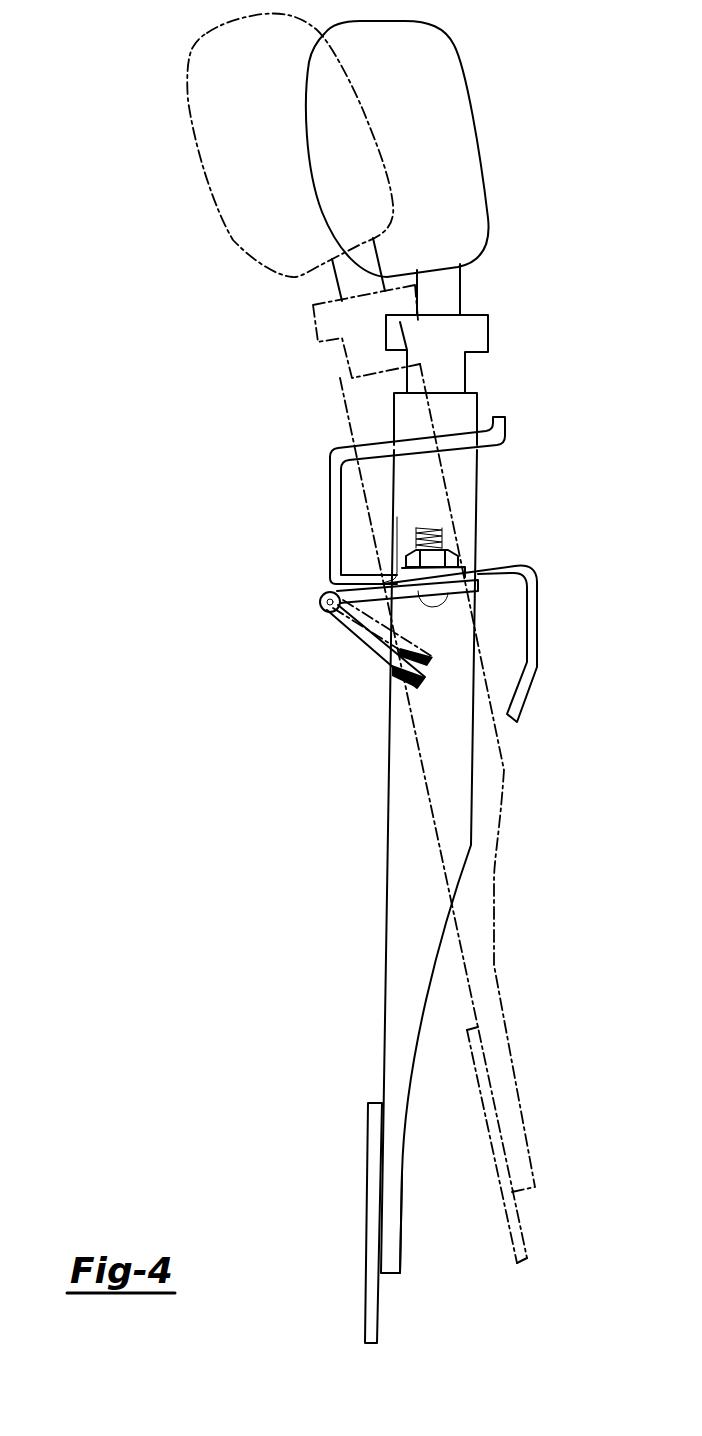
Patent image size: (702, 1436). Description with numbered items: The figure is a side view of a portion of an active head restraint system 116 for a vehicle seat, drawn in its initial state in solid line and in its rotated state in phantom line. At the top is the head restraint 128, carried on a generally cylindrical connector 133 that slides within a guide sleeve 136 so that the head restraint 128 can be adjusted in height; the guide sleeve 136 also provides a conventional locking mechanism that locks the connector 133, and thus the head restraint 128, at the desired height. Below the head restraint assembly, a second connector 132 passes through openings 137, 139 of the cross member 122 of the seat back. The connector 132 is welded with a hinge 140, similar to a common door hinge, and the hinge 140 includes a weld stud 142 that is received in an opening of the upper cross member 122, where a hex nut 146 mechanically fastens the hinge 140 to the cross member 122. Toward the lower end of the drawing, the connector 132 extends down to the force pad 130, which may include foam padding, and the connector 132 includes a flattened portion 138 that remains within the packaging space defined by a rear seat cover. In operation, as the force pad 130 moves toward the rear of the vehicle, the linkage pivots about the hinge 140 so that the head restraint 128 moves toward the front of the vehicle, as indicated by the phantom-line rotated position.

The active head restraint system 116 is at (119, 44).
The head restraint 128 is at (470, 157).
The connector 133 is at (462, 283).
The guide sleeve 136 is at (470, 333).
The opening 137 is at (352, 447).
The cross member 122 is at (330, 500).
The opening 139 is at (397, 517).
The weld stud 142 is at (444, 538).
The hex nut 146 is at (460, 556).
The hinge 140 is at (362, 645).
The connector 132 is at (445, 803).
The force pad 130 is at (368, 1215).
The flattened portion 138 is at (403, 1168).